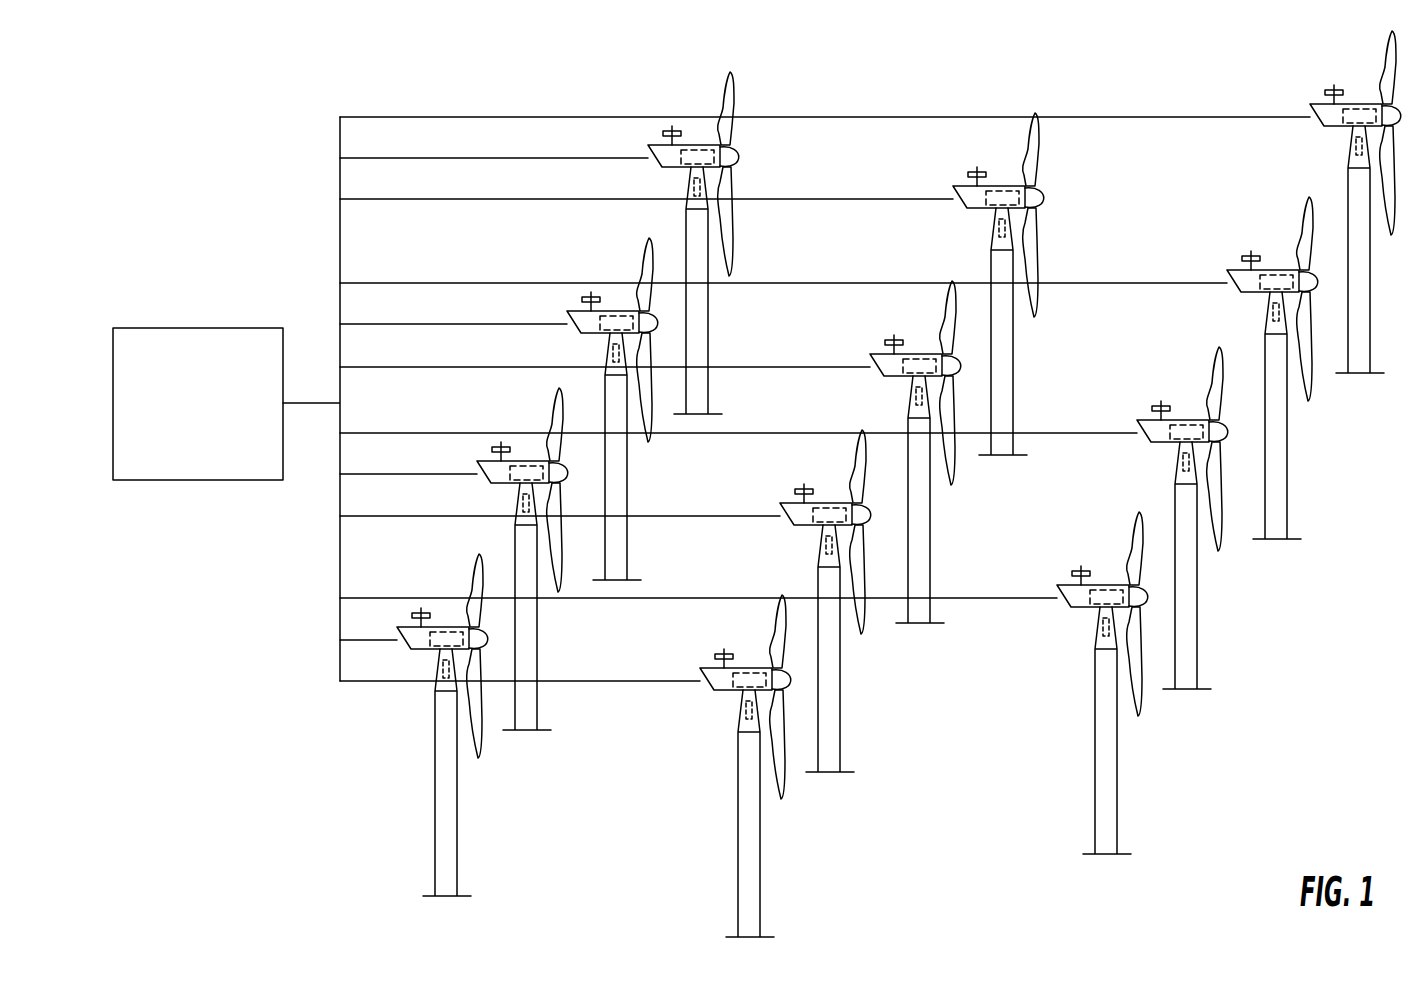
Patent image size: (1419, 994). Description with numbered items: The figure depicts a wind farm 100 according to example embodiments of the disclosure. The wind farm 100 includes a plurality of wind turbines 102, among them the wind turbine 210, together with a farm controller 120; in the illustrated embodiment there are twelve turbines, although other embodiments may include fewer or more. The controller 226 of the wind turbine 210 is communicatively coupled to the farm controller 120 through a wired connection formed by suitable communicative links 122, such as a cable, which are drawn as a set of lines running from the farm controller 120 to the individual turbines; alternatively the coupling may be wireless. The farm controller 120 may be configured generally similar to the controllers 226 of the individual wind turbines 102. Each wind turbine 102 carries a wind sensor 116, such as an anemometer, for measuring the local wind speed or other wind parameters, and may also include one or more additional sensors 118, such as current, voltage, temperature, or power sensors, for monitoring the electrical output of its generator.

The wind farm 100 is at (230, 183).
The wind turbine 102 is at (845, 662).
The wind sensor 116 is at (717, 666).
The additional sensor 118 is at (738, 719).
The farm controller 120 is at (216, 412).
The communicative link 122 is at (500, 283).
The wind turbine 210 is at (468, 833).
The controller 226 is at (447, 628).